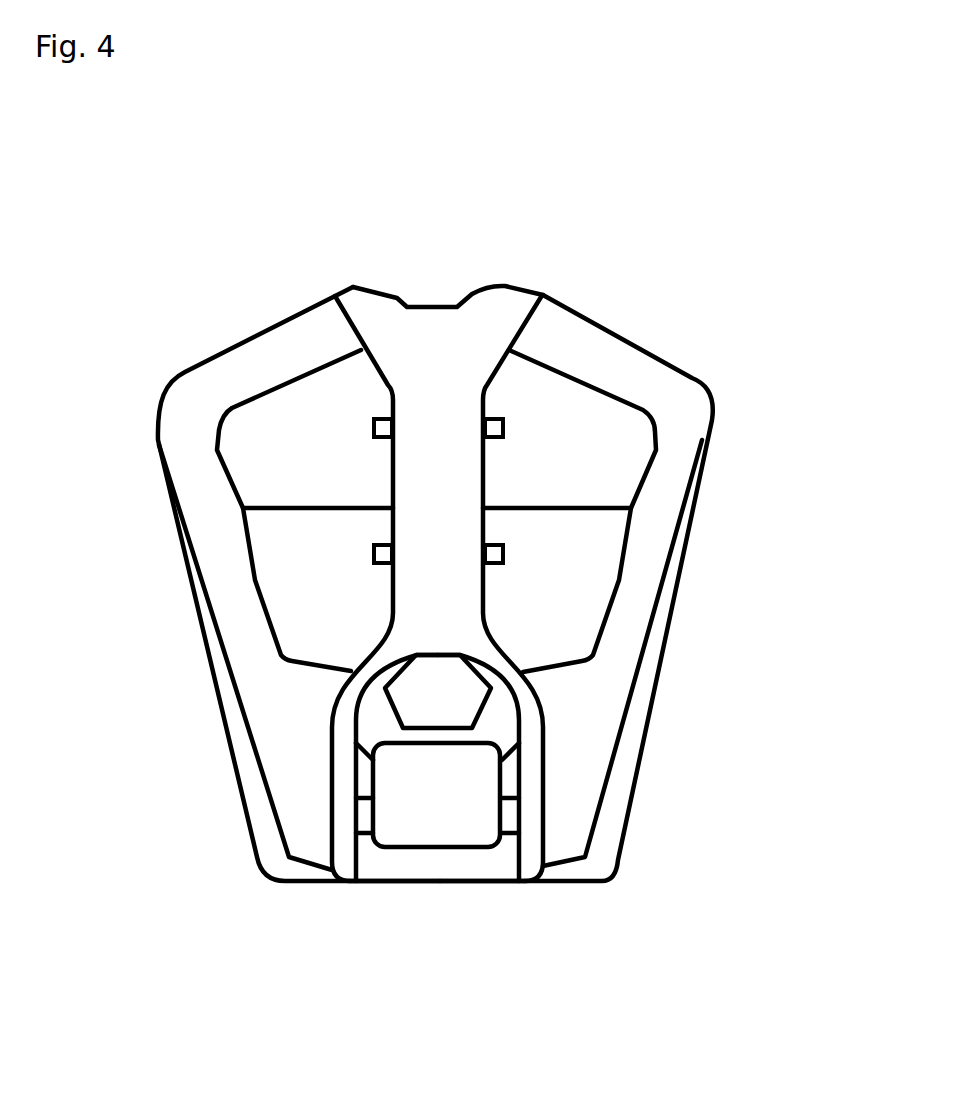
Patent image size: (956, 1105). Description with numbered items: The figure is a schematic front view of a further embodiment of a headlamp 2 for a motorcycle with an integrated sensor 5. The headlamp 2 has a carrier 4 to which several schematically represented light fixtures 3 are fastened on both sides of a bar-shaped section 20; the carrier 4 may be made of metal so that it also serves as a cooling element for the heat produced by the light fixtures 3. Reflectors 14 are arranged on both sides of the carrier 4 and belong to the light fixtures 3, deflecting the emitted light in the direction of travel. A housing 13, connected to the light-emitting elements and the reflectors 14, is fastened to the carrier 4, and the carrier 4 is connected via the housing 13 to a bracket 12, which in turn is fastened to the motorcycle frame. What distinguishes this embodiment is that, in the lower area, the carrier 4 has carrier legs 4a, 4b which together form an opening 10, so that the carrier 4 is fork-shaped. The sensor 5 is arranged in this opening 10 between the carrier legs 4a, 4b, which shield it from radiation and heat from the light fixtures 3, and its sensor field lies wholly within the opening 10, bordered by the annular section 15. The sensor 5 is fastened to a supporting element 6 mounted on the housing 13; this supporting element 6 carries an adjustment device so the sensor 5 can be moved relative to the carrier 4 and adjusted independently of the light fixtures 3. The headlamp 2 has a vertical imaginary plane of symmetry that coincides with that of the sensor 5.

The headlamp 2 is at (205, 305).
The light fixture 3 is at (505, 557).
The carrier 4 is at (423, 467).
The carrier leg 4a is at (545, 882).
The carrier leg 4b is at (345, 868).
The sensor 5 is at (402, 822).
The supporting element 6 is at (487, 866).
The opening 10 is at (430, 860).
The bracket 12 is at (620, 853).
The housing 13 is at (275, 705).
The reflector 14 is at (608, 560).
The annular section 15 is at (377, 730).
The bar-shaped section 20 is at (430, 580).